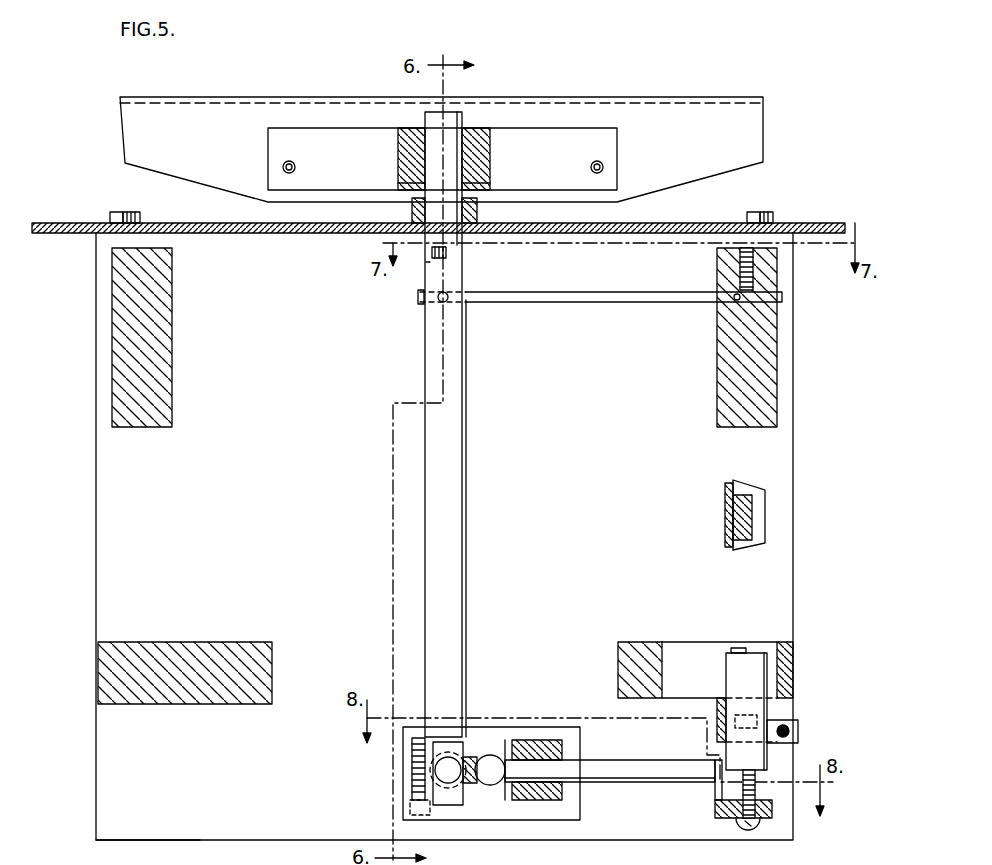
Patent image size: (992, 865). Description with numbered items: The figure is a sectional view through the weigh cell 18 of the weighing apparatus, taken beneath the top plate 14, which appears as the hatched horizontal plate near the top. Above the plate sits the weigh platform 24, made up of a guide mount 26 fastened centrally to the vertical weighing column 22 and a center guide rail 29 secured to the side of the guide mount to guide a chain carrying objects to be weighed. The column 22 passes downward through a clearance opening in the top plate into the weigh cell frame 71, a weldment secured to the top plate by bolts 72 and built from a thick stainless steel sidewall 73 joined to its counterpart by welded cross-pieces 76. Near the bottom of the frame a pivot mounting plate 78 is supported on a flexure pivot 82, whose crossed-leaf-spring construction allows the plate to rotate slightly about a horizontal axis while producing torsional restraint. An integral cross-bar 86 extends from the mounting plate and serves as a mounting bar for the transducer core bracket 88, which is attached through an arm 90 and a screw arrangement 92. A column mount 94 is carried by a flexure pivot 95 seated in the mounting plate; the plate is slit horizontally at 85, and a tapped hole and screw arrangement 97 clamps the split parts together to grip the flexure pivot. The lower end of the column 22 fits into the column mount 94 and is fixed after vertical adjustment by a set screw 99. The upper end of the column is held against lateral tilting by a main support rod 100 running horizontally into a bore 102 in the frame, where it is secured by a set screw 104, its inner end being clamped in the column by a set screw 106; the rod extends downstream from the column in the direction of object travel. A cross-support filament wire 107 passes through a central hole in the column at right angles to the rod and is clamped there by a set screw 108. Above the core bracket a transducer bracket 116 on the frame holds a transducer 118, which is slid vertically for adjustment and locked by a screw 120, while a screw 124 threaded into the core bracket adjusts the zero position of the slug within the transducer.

The top plate 14 is at (44, 222).
The weigh cell 18 is at (86, 512).
The vertical weighing column 22 is at (458, 443).
The weigh platform 24 is at (130, 129).
The guide mount 26 is at (490, 132).
The center guide rail 29 is at (655, 110).
The weigh cell frame 71 is at (790, 470).
The bolt 72 is at (118, 212).
The sidewall 73 is at (110, 757).
The cross-piece 76 is at (165, 345).
The pivot mounting plate 78 is at (572, 808).
The flexure pivot 82 is at (488, 786).
The slit 85 is at (420, 773).
The cross-bar 86 is at (560, 745).
The transducer core bracket 88 is at (716, 812).
The arm 90 is at (650, 770).
The screw arrangement 92 is at (535, 745).
The column mount 94 is at (435, 777).
The flexure pivot 95 is at (440, 742).
The tapped hole and screw arrangement 97 is at (410, 806).
The set screw 99 is at (470, 755).
The main support rod 100 is at (592, 292).
The bore 102 is at (735, 297).
The set screw 104 is at (740, 270).
The set screw 106 is at (448, 300).
The cross-support filament wire 107 is at (446, 253).
The set screw 108 is at (430, 262).
The transducer bracket 116 is at (775, 714).
The transducer 118 is at (758, 685).
The screw 120 is at (800, 732).
The screw 124 is at (738, 832).